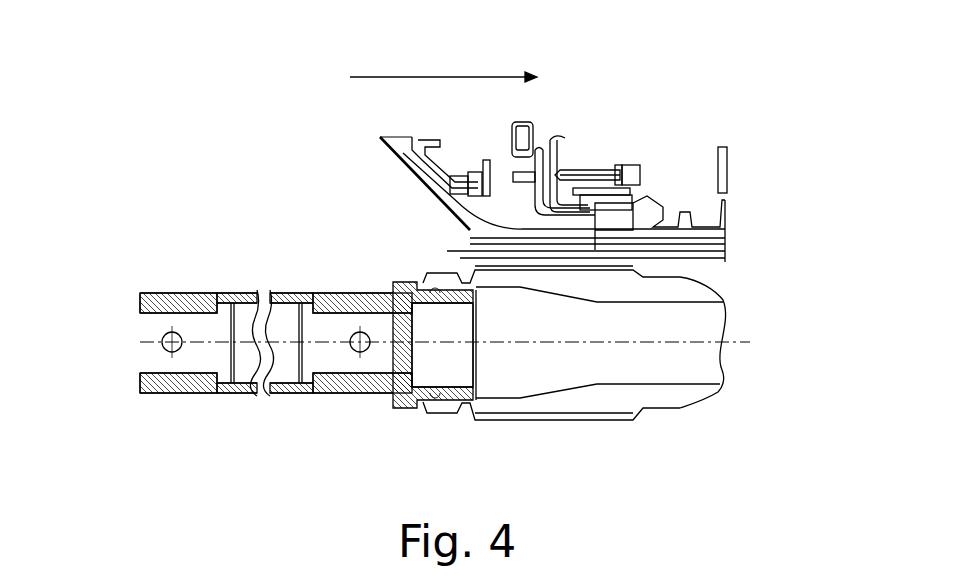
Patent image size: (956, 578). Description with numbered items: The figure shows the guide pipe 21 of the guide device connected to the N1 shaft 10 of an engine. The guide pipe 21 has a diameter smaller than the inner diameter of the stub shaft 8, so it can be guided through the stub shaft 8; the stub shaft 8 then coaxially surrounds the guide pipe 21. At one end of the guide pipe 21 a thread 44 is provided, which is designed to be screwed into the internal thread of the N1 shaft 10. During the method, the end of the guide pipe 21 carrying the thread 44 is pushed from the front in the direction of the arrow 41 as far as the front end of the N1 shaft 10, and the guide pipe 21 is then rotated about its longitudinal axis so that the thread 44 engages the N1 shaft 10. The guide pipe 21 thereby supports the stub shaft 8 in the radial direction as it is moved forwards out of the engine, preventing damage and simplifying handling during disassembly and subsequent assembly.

The stub shaft 8 is at (464, 238).
The N1 shaft 10 is at (620, 400).
The guide pipe 21 is at (202, 393).
The arrow 41 is at (443, 65).
The thread 44 is at (458, 408).